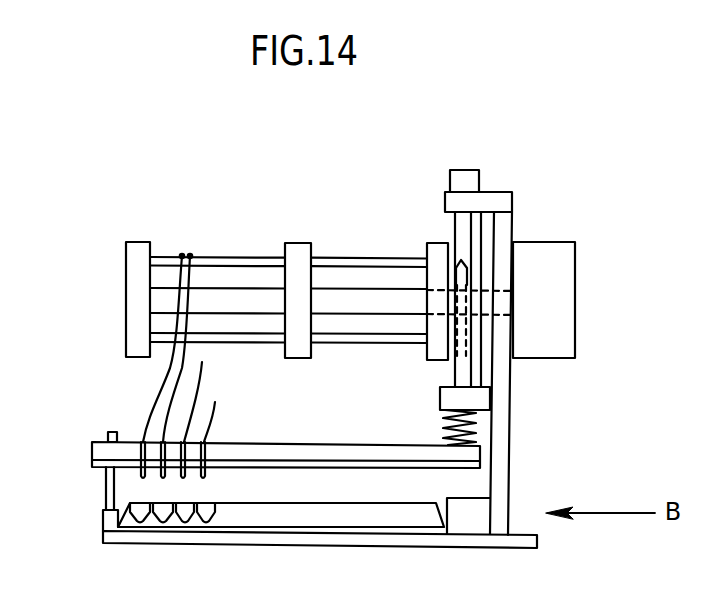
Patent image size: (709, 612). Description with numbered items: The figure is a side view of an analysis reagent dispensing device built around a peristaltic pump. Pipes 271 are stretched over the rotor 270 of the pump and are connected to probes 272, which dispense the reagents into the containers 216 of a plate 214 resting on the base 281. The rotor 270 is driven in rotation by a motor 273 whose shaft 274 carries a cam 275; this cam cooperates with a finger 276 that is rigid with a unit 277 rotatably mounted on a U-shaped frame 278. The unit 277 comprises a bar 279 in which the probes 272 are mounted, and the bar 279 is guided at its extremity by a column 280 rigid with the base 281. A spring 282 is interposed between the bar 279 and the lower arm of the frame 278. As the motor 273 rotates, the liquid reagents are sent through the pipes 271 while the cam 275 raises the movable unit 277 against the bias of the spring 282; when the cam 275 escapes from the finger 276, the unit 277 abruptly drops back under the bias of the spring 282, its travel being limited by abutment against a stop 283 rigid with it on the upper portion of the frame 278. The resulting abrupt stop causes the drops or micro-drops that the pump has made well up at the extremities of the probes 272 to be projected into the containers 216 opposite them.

The plate 214 is at (243, 513).
The containers 216 is at (141, 527).
The rotor 270 is at (168, 238).
The pipes 271 is at (184, 254).
The probes 272 is at (143, 478).
The motor 273 is at (557, 260).
The shaft 274 is at (503, 303).
The cam 275 is at (457, 355).
The finger 276 is at (455, 262).
The unit 277 is at (457, 376).
The U-shaped frame 278 is at (490, 200).
The bar 279 is at (263, 453).
The column 280 is at (112, 430).
The base 281 is at (375, 541).
The spring 282 is at (445, 428).
The stop 283 is at (463, 182).